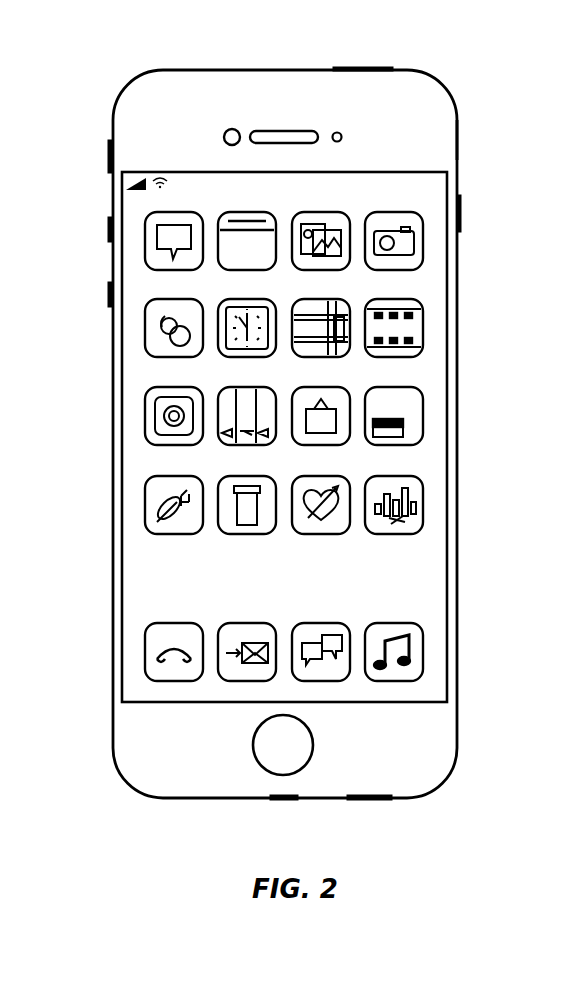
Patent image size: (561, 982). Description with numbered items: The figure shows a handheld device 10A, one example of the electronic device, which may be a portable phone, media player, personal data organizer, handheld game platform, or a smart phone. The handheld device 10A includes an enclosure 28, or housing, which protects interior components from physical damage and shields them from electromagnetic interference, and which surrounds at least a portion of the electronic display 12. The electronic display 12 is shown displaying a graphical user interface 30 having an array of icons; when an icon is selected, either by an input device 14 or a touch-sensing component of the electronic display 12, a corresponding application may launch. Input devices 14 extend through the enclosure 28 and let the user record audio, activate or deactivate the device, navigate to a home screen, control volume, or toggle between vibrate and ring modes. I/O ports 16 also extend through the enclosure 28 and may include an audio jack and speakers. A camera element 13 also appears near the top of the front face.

The handheld device 10A is at (116, 68).
The electronic display 12 is at (448, 471).
The camera 13 is at (232, 128).
The input devices 14 is at (367, 70).
The I/O ports 16 is at (198, 800).
The enclosure 28 is at (458, 143).
The graphical user interface 30 is at (438, 373).